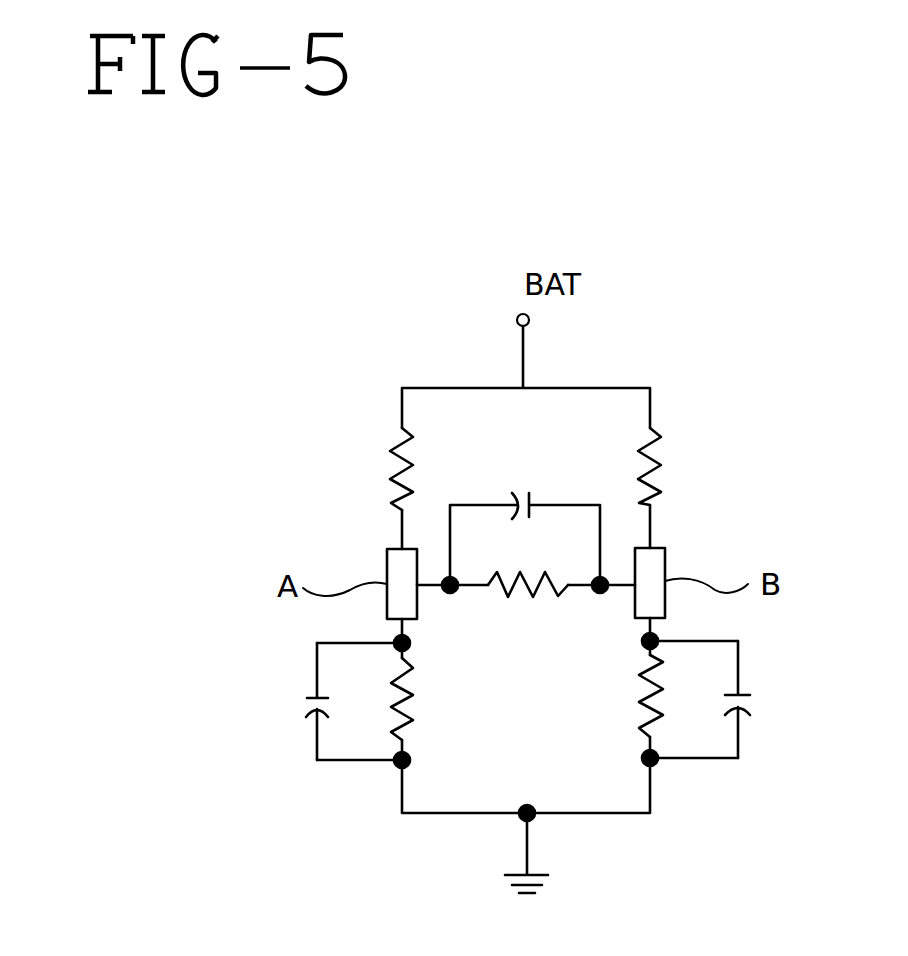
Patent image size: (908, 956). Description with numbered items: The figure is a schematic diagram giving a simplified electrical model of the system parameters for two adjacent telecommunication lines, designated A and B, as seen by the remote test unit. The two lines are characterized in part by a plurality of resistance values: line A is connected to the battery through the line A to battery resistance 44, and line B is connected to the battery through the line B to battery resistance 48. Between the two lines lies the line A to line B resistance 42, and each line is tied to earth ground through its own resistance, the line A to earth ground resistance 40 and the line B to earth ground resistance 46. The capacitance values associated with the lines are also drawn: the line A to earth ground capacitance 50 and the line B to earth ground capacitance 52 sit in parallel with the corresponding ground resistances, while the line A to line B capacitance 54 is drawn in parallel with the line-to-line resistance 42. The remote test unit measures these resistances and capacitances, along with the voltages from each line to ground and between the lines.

The line A to earth ground resistance 40 is at (413, 695).
The line A to line B resistance 42 is at (533, 597).
The line A to battery resistance 44 is at (392, 477).
The line B to earth ground resistance 46 is at (639, 716).
The line B to battery resistance 48 is at (660, 477).
The line A to earth ground capacitance 50 is at (307, 698).
The line B to earth ground capacitance 52 is at (750, 695).
The line A to line B capacitance 54 is at (513, 493).